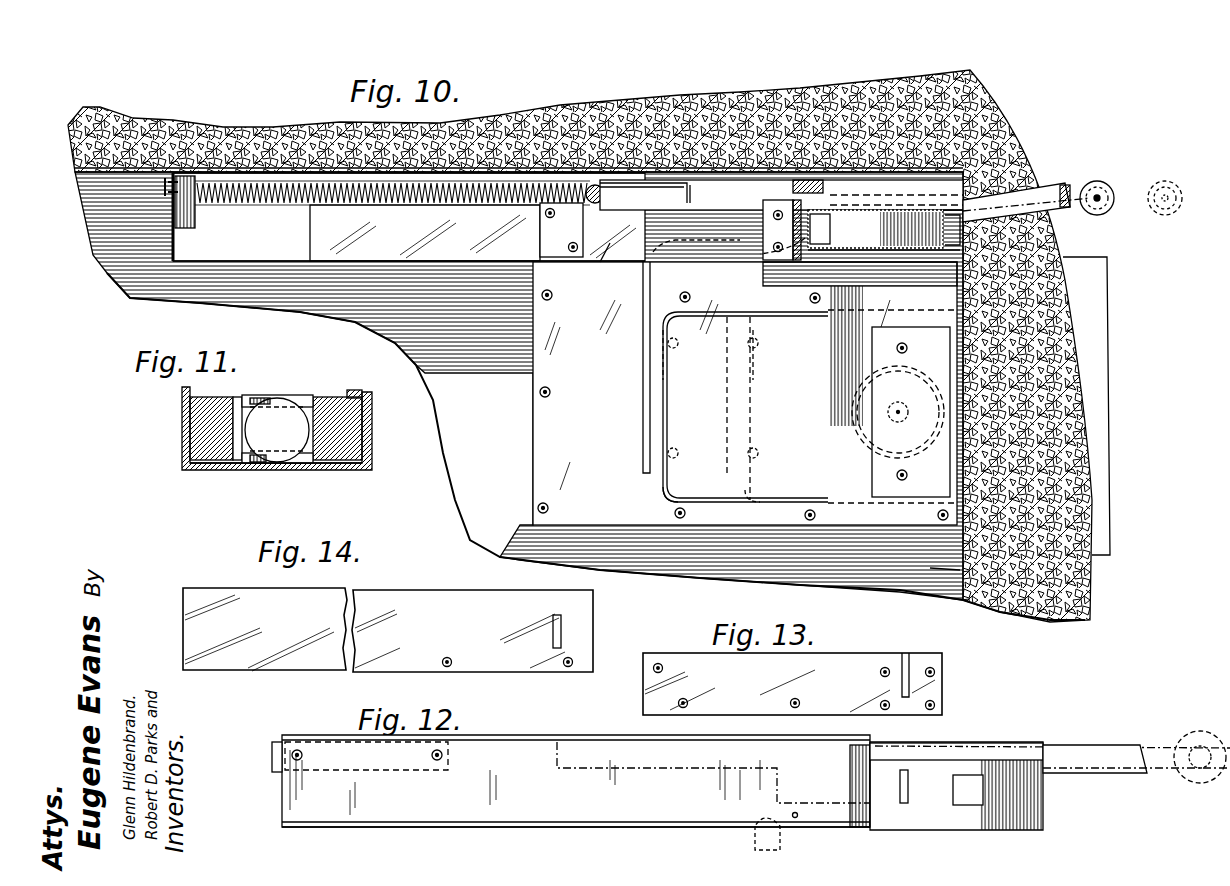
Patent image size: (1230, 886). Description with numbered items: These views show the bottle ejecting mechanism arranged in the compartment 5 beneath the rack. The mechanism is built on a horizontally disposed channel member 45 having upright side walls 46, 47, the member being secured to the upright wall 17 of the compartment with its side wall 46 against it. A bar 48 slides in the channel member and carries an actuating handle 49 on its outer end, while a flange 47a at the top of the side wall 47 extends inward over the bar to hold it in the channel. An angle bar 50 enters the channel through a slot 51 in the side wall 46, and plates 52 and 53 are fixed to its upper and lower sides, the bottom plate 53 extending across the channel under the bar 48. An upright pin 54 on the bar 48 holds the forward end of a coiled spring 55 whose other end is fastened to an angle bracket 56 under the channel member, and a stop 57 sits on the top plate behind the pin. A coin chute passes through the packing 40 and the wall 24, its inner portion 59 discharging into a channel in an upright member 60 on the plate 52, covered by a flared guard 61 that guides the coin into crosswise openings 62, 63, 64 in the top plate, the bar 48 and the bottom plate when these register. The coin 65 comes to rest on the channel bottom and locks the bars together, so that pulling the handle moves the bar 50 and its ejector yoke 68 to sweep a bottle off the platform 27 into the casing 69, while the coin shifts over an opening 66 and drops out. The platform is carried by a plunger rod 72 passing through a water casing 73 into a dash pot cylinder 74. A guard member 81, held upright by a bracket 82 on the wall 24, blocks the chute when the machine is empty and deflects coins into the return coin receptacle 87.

In FIG. 10, the compartment 5 is at (596, 446).
In FIG. 10, the upright wall 17 is at (78, 178).
In FIG. 10, the wall 24 is at (932, 570).
In FIG. 10, the platform 27 is at (885, 437).
In FIG. 10, the packing 40 is at (562, 122).
In FIG. 10, the channel member 45 is at (409, 217).
In FIG. 11, the channel member 45 is at (300, 464).
In FIG. 12, the channel member 45 is at (282, 806).
In FIG. 10, the side wall 46 is at (286, 262).
In FIG. 11, the side wall 46 is at (182, 422).
In FIG. 12, the side wall 46 is at (540, 826).
In FIG. 10, the side wall 47 is at (240, 175).
In FIG. 11, the side wall 47 is at (345, 437).
In FIG. 12, the side wall 47 is at (540, 741).
In FIG. 10, the flange 47a is at (808, 178).
In FIG. 11, the flange 47a is at (352, 390).
In FIG. 12, the flange 47a is at (985, 752).
In FIG. 11, the bar 48 is at (353, 443).
In FIG. 12, the bar 48 is at (845, 805).
In FIG. 10, the actuating handle 49 is at (1135, 152).
In FIG. 12, the actuating handle 49 is at (1185, 735).
In FIG. 10, the angle bar 50 is at (652, 375).
In FIG. 11, the angle bar 50 is at (203, 430).
In FIG. 12, the angle bar 50 is at (755, 843).
In FIG. 12, the slot 51 is at (860, 828).
In FIG. 10, the top plate 52 is at (600, 262).
In FIG. 11, the top plate 52 is at (240, 400).
In FIG. 13, the top plate 52 is at (670, 660).
In FIG. 10, the bottom plate 53 is at (310, 240).
In FIG. 11, the bottom plate 53 is at (207, 468).
In FIG. 14, the bottom plate 53 is at (410, 598).
In FIG. 10, the upright pin 54 is at (601, 201).
In FIG. 10, the coiled spring 55 is at (422, 208).
In FIG. 10, the angle bracket 56 is at (173, 205).
In FIG. 12, the angle bracket 56 is at (272, 750).
In FIG. 10, the stop 57 is at (540, 226).
In FIG. 10, the inner inclined portion 59 is at (885, 230).
In FIG. 10, the upright member 60 is at (795, 230).
In FIG. 10, the guard 61 is at (729, 239).
In FIG. 11, the opening 62 is at (295, 402).
In FIG. 13, the opening 62 is at (906, 654).
In FIG. 12, the opening 63 is at (906, 805).
In FIG. 11, the opening 64 is at (253, 466).
In FIG. 14, the opening 64 is at (562, 630).
In FIG. 11, the coin 65 is at (278, 425).
In FIG. 12, the opening 66 is at (980, 790).
In FIG. 10, the ejector yoke 68 is at (665, 487).
In FIG. 10, the casing 69 is at (1108, 385).
In FIG. 10, the plunger rod 72 is at (898, 404).
In FIG. 10, the casing 73 is at (533, 484).
In FIG. 10, the dash pot cylinder 74 is at (865, 450).
In FIG. 10, the guard member 81 is at (1026, 203).
In FIG. 10, the bracket 82 is at (947, 325).
In FIG. 10, the return coin receptacle 87 is at (1068, 183).